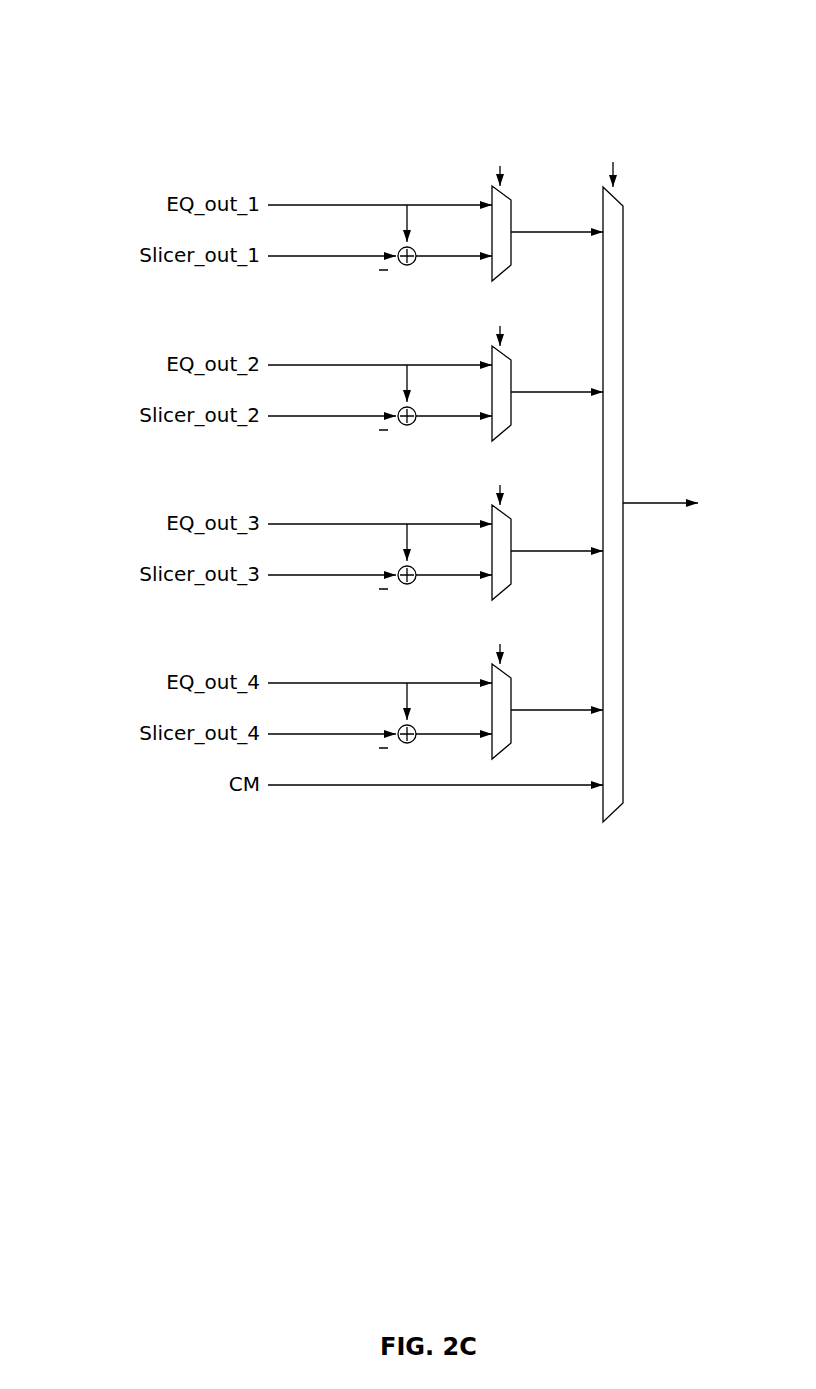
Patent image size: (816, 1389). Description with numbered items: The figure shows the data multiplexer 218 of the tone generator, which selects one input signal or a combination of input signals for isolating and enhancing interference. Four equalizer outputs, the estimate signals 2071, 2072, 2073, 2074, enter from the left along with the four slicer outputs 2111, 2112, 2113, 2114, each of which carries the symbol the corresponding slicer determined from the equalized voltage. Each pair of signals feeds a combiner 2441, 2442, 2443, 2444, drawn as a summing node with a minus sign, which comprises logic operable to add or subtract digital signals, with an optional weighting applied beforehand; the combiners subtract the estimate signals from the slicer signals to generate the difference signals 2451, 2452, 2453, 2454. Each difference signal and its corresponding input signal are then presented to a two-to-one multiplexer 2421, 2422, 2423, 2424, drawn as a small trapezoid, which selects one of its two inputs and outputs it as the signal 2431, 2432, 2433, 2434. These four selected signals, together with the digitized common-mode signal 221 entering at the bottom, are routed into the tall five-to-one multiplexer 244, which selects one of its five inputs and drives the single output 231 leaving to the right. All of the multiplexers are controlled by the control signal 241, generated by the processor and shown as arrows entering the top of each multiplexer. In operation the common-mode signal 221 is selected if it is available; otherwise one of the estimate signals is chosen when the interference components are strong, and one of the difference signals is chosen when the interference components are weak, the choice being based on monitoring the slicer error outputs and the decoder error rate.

The data multiplexer 218 is at (108, 76).
The estimate signal 2071 is at (329, 205).
The estimate signal 2072 is at (329, 365).
The estimate signal 2073 is at (329, 524).
The estimate signal 2074 is at (329, 683).
The slicer output signal 2111 is at (329, 256).
The slicer output signal 2112 is at (329, 416).
The slicer output signal 2113 is at (329, 575).
The slicer output signal 2114 is at (329, 734).
The combiner 2441 is at (413, 263).
The combiner 2442 is at (413, 423).
The combiner 2443 is at (413, 582).
The combiner 2444 is at (413, 741).
The difference signal 2451 is at (463, 256).
The difference signal 2452 is at (463, 416).
The difference signal 2453 is at (463, 575).
The difference signal 2454 is at (463, 734).
The 2-to-1 multiplexer 2421 is at (512, 219).
The 2-to-1 multiplexer 2422 is at (512, 379).
The 2-to-1 multiplexer 2423 is at (512, 538).
The 2-to-1 multiplexer 2424 is at (512, 697).
The multiplexer output signal 2431 is at (575, 234).
The multiplexer output signal 2432 is at (575, 394).
The multiplexer output signal 2433 is at (575, 553).
The multiplexer output signal 2434 is at (575, 712).
The control signal 241 is at (556, 400).
The 5-to-1 multiplexer 244 is at (625, 223).
The digitized common-mode signal 221 is at (344, 785).
The multiplexed output 231 is at (670, 503).